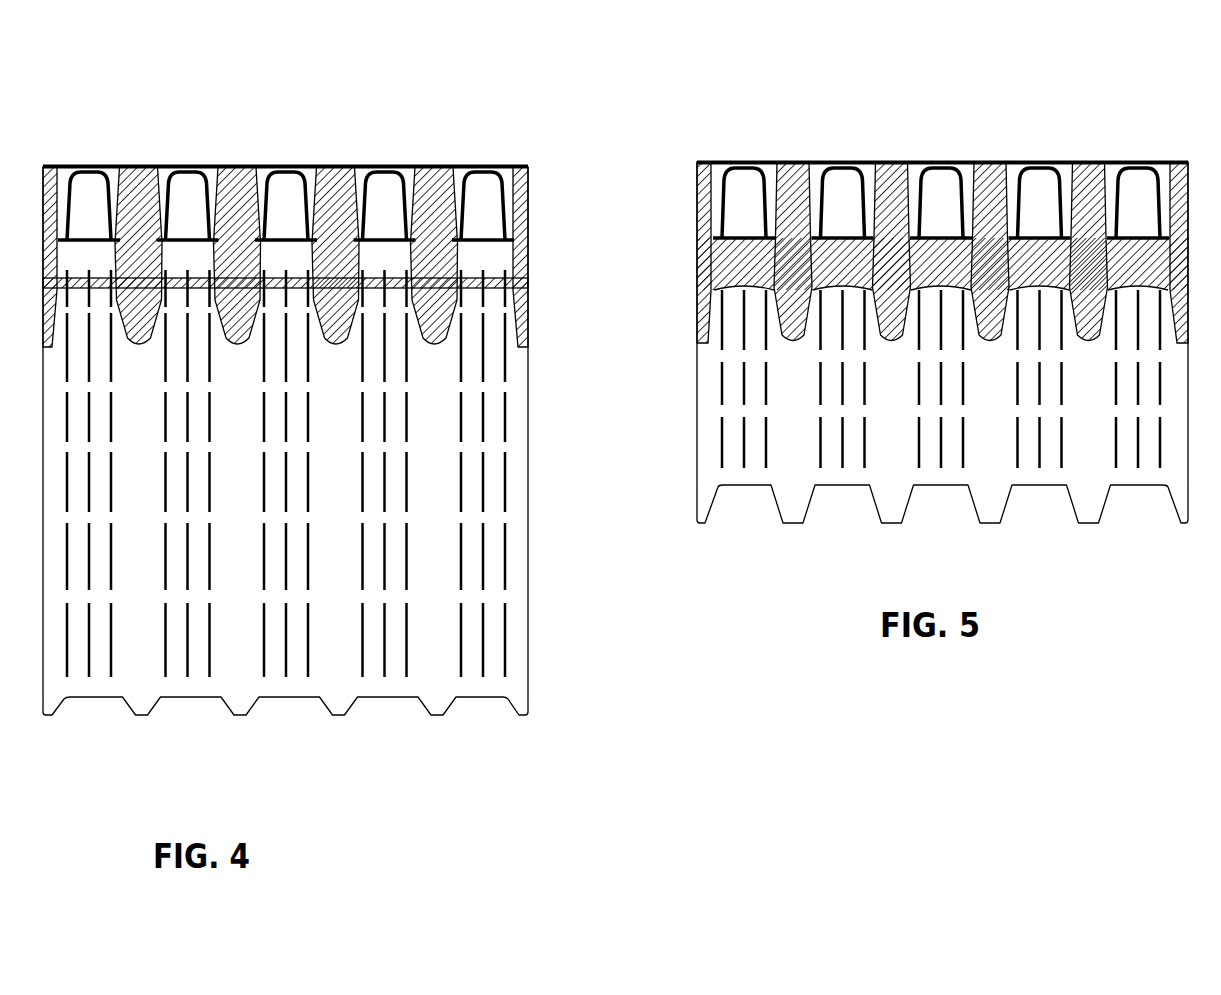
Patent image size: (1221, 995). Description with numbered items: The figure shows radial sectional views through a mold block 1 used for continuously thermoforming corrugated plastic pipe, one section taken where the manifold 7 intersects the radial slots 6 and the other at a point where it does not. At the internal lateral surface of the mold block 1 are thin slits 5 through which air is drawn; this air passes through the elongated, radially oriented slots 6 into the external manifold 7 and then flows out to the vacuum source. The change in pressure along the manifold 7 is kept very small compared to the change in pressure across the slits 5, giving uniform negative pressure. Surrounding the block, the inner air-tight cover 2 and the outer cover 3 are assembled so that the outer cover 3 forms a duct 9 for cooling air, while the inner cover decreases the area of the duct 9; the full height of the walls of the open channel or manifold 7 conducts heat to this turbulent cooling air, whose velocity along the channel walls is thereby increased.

In FIG. 4, the mold block 1 is at (513, 380).
In FIG. 5, the mold block 1 is at (730, 380).
In FIG. 4, the inner air-tight cover 2 is at (503, 180).
In FIG. 5, the inner air-tight cover 2 is at (699, 178).
In FIG. 4, the outer cover 3 is at (260, 167).
In FIG. 5, the outer cover 3 is at (860, 162).
In FIG. 4, the slits 5 is at (480, 467).
In FIG. 5, the slits 5 is at (740, 450).
In FIG. 4, the radial slots 6 is at (477, 252).
In FIG. 4, the manifold 7 is at (88, 187).
In FIG. 5, the manifold 7 is at (748, 187).
In FIG. 4, the duct 9 is at (207, 170).
In FIG. 5, the duct 9 is at (972, 186).